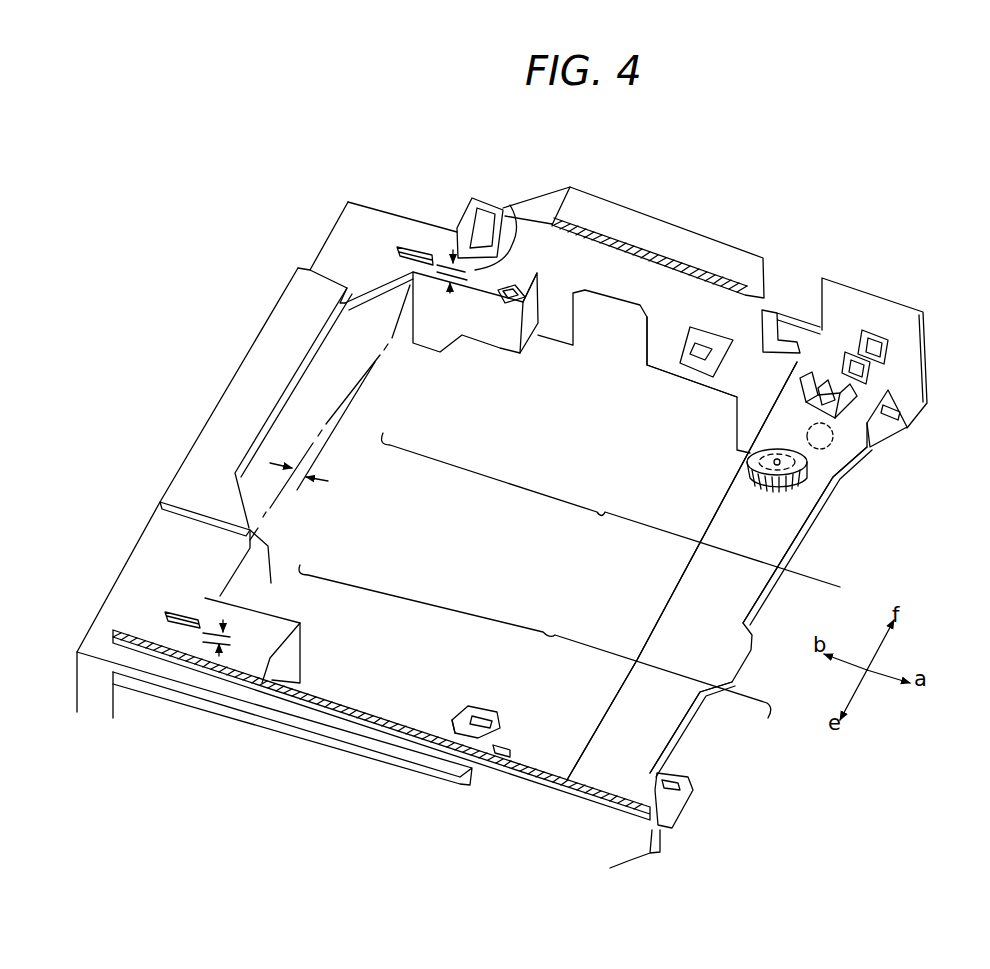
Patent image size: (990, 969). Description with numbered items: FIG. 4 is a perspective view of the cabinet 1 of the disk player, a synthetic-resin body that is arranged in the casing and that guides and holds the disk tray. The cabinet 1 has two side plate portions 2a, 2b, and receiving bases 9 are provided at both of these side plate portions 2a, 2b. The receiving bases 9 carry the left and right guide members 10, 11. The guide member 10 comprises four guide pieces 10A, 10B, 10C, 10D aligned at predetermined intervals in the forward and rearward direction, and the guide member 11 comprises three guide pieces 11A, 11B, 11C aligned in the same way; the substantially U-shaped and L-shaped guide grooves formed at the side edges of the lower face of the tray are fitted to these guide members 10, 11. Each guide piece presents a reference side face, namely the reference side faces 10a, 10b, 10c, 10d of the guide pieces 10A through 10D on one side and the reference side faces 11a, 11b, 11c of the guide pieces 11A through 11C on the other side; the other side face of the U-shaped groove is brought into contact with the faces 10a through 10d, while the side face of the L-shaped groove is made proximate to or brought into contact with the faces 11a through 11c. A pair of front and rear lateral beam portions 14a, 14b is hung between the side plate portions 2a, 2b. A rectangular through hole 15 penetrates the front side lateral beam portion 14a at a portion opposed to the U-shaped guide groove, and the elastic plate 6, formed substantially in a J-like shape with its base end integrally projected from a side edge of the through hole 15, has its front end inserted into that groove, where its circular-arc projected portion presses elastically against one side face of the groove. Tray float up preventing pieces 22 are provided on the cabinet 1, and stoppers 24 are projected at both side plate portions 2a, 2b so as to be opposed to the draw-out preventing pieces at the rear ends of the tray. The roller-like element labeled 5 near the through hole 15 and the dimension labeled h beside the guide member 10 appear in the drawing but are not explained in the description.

The cabinet 1 is at (248, 350).
The side plate portion 2a is at (875, 300).
The side plate portion 2b is at (517, 767).
The roller 5 is at (752, 462).
The elastic plate 6 is at (828, 380).
The receiving bases 9 is at (520, 290).
The guide member 10 is at (611, 510).
The reference side face 10a is at (400, 256).
The reference side face 10b is at (500, 303).
The reference side face 10c is at (690, 352).
The reference side face 10d is at (893, 423).
The guide piece 10A is at (400, 258).
The guide piece 10B is at (530, 310).
The guide piece 10C is at (700, 365).
The guide piece 10D is at (885, 432).
The guide member 11 is at (535, 641).
The reference side face 11a is at (175, 628).
The reference side face 11b is at (463, 738).
The reference side face 11c is at (672, 805).
The guide piece 11A is at (205, 612).
The guide piece 11B is at (480, 703).
The guide piece 11C is at (668, 773).
The front side lateral beam portion 14a is at (663, 632).
The rear lateral beam portion 14b is at (222, 412).
The rectangular through hole 15 is at (813, 392).
The tray float up preventing pieces 22 is at (462, 226).
The stoppers 24 is at (765, 315).
The height dimension h is at (300, 466).